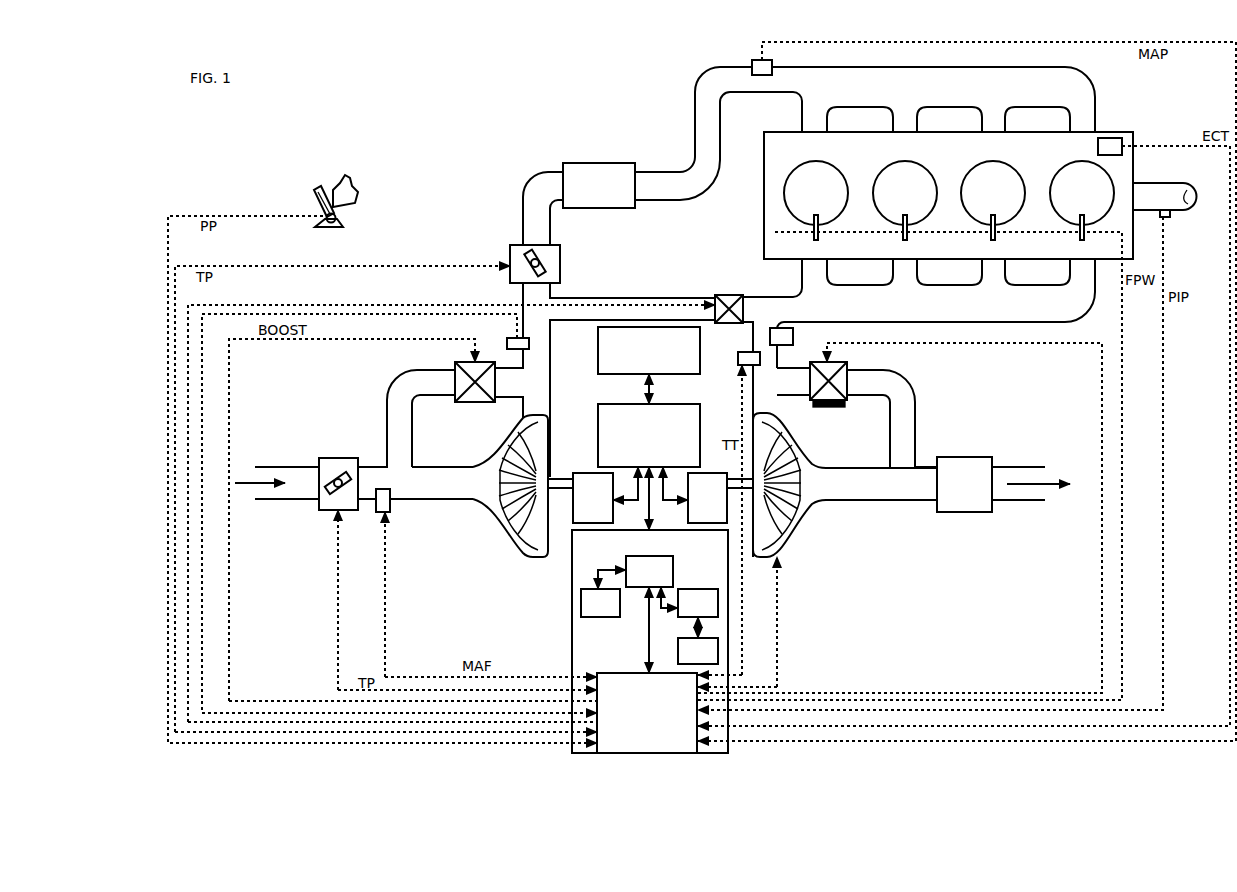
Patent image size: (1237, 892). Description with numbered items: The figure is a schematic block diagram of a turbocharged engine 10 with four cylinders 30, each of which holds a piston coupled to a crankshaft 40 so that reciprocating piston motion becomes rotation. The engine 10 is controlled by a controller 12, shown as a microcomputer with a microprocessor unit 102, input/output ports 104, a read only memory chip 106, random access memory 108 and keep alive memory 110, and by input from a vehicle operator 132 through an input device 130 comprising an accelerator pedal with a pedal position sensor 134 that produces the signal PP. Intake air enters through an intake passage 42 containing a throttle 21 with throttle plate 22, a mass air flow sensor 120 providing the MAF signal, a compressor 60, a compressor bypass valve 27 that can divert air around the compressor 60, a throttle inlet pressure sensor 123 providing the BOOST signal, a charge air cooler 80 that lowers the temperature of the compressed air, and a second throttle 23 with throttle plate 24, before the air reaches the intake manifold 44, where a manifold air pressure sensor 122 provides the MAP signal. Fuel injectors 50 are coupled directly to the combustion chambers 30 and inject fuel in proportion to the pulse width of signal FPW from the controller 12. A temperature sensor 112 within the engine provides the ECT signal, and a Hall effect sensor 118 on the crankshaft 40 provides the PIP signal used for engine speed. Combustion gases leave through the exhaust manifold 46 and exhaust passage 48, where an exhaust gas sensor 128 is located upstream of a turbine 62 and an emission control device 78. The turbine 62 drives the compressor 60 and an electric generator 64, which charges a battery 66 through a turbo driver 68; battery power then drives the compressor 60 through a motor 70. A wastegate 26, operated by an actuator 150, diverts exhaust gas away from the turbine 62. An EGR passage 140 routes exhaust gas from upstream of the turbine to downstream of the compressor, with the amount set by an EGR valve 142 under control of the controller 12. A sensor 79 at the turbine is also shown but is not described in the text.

The engine 10 is at (1040, 155).
The controller 12 is at (621, 641).
The throttle 21 is at (333, 458).
The throttle plate 22 is at (343, 475).
The throttle 23 is at (515, 245).
The throttle plate 24 is at (545, 276).
The wastegate 26 is at (847, 368).
The compressor bypass valve 27 is at (455, 368).
The cylinders 30 is at (826, 201).
The crankshaft 40 is at (1170, 183).
The intake passage 42 is at (312, 491).
The intake manifold 44 is at (847, 95).
The exhaust manifold 46 is at (824, 318).
The exhaust passage 48 is at (888, 487).
The fuel injectors 50 is at (814, 238).
The compressor 60 is at (510, 520).
The turbine 62 is at (793, 440).
The electric generator 64 is at (717, 502).
The battery 66 is at (598, 355).
The turbo driver 68 is at (680, 404).
The motor 70 is at (603, 502).
The emission control device 78 is at (974, 492).
The turbine temperature sensor 79 is at (738, 358).
The charge air cooler 80 is at (575, 163).
The microprocessor unit 102 is at (624, 562).
The input/output ports 104 is at (685, 743).
The read only memory chip 106 is at (581, 600).
The random access memory 108 is at (685, 589).
The keep alive memory 110 is at (678, 650).
The temperature sensor 112 is at (1110, 138).
The Hall effect sensor 118 is at (1168, 217).
The mass air flow sensor 120 is at (390, 505).
The manifold air pressure sensor 122 is at (752, 62).
The throttle inlet pressure sensor 123 is at (507, 342).
The exhaust gas sensor 128 is at (793, 336).
The input device 130 is at (312, 200).
The vehicle operator 132 is at (352, 193).
The pedal position sensor 134 is at (342, 220).
The EGR passage 140 is at (632, 298).
The EGR valve 142 is at (735, 296).
The actuator 150 is at (845, 405).